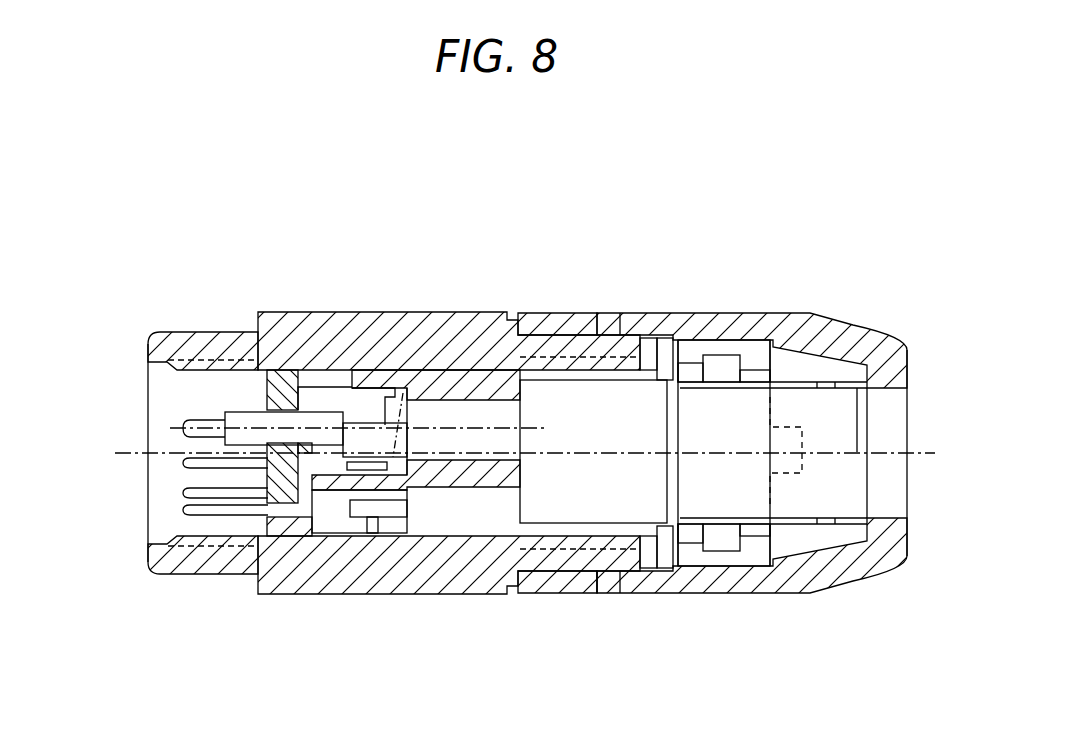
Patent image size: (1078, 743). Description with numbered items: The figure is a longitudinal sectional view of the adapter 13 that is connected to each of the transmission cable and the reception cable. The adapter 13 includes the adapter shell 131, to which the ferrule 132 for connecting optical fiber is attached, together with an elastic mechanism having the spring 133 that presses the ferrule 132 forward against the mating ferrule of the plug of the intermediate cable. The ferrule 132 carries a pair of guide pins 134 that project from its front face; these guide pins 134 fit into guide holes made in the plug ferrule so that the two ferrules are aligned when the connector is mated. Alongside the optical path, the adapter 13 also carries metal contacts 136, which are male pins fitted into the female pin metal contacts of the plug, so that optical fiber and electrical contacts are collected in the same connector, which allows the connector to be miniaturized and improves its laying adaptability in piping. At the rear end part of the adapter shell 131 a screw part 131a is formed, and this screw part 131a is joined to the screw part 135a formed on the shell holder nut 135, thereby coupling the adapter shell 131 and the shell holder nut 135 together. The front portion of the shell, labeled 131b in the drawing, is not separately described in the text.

The adapter 13 is at (735, 250).
The adapter shell 131 is at (485, 309).
The screw part 131a is at (597, 569).
The housing end cap portion 131b is at (188, 575).
The ferrule 132 is at (323, 392).
The spring 133 is at (385, 392).
The guide pins 134 is at (196, 420).
The shell holder nut 135 is at (858, 322).
The screw part 135a is at (620, 569).
The metal contacts 136 is at (182, 510).